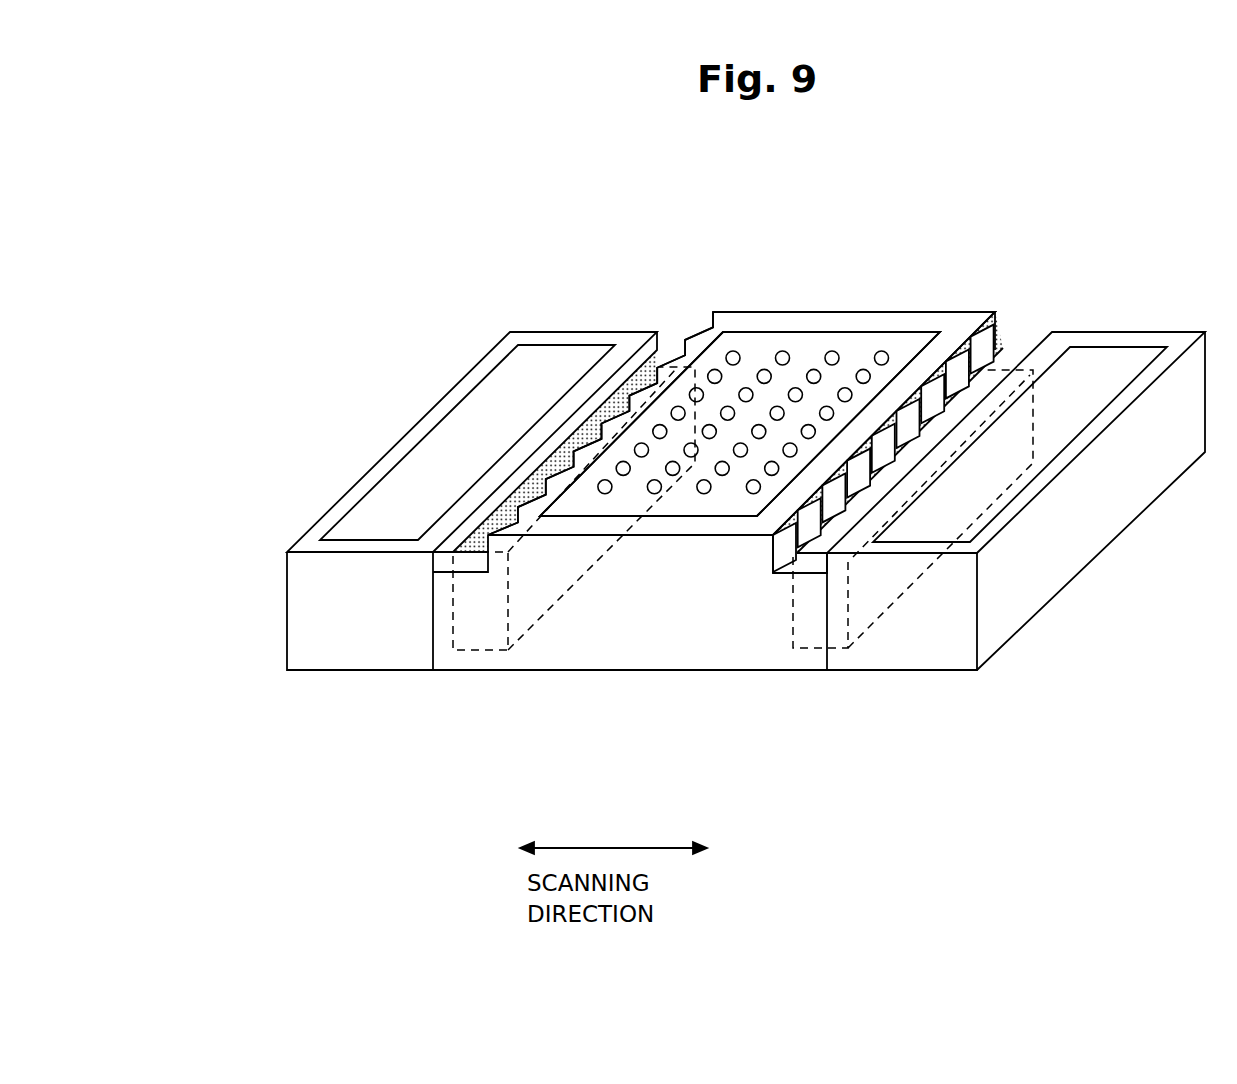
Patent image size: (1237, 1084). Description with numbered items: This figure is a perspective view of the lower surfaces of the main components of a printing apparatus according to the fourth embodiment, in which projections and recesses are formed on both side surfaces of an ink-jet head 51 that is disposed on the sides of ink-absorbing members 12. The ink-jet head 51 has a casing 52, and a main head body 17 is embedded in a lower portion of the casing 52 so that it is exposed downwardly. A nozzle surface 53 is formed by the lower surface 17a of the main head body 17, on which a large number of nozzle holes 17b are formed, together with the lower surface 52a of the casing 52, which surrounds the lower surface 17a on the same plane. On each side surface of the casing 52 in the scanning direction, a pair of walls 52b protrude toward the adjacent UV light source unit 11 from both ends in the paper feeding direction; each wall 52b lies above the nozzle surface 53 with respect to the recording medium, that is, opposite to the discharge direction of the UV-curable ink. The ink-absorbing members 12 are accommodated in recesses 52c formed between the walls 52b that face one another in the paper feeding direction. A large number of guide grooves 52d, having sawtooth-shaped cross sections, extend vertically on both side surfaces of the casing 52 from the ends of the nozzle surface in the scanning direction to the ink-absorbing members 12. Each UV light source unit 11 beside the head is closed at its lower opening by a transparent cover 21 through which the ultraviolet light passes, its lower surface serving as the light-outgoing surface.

The UV light source unit 11 is at (268, 614).
The ink-absorbing member 12 is at (488, 652).
The main head body 17 is at (603, 502).
The lower surface of the main head body 17a is at (775, 340).
The nozzle hole 17b is at (833, 352).
The transparent cover 21 is at (510, 388).
The ink-jet head 51 is at (630, 669).
The casing 52 is at (695, 672).
The lower surface of the casing 52a is at (705, 327).
The wall 52b is at (673, 350).
The recess 52c is at (997, 377).
The guide groove 52d is at (623, 350).
The nozzle surface 53 is at (832, 205).